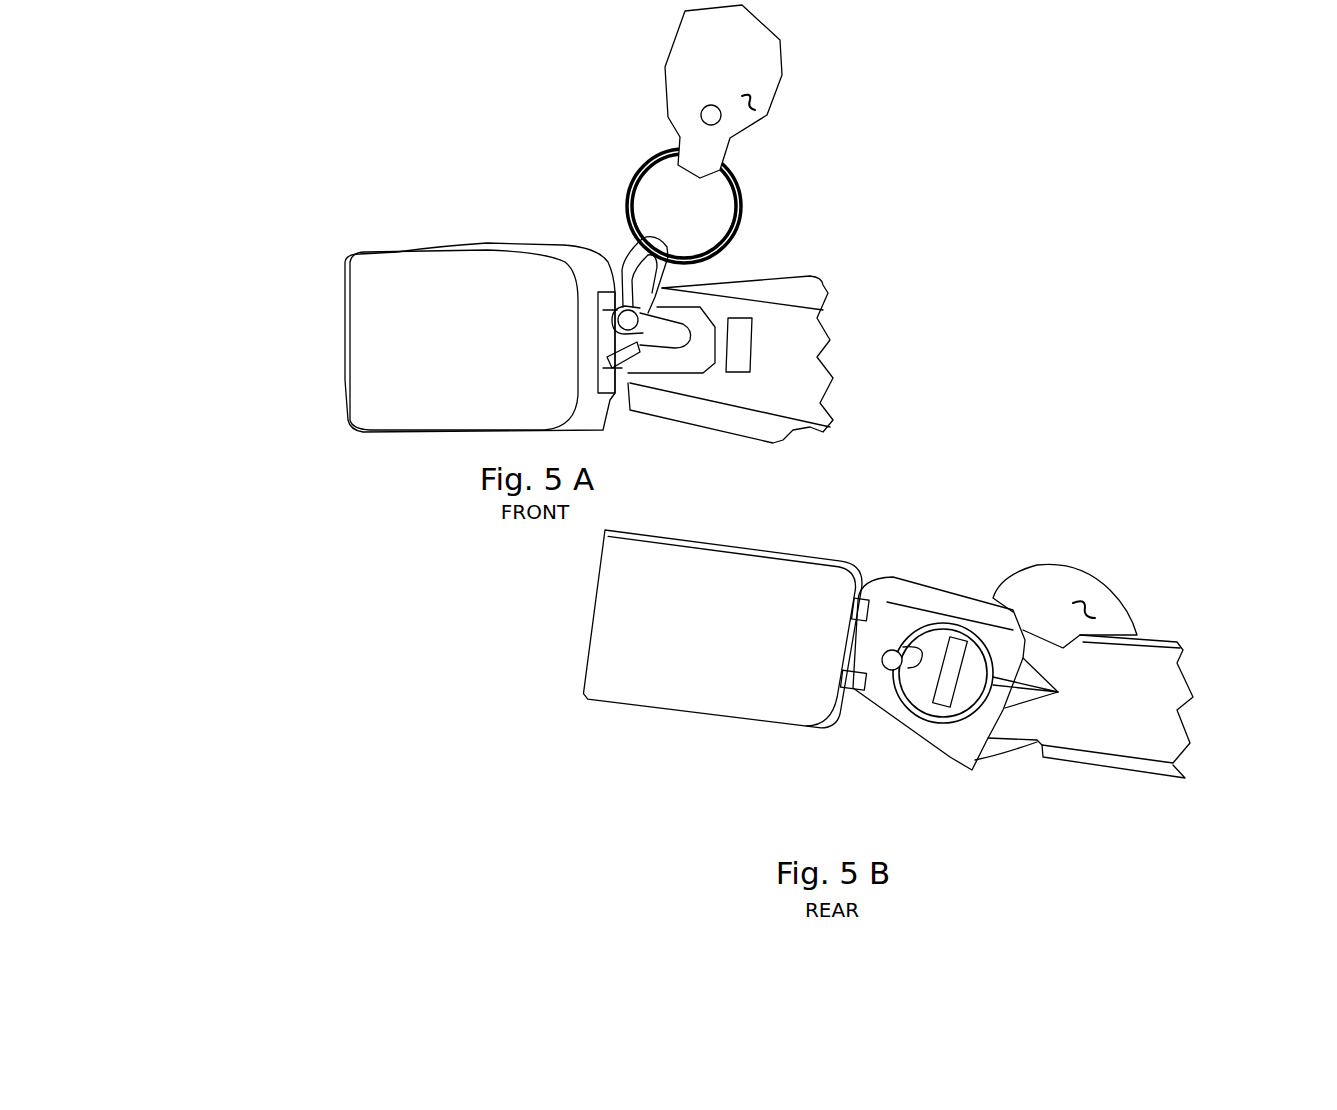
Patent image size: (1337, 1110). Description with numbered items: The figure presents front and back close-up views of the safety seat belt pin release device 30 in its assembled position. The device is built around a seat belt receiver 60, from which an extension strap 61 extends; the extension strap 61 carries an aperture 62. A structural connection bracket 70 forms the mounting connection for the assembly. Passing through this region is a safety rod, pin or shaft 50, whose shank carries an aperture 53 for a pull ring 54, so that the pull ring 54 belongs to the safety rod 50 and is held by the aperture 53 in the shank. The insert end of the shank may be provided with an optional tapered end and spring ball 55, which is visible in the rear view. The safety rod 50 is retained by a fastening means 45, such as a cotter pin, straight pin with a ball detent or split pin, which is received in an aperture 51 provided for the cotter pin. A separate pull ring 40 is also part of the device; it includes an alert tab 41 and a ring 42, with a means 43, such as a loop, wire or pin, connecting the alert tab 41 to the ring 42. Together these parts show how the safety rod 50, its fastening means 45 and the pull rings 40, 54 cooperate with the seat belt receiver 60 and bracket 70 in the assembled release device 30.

In FIG. 5A, the safety seat belt pin release device 30 is at (305, 468).
In FIG. 5B, the safety seat belt pin release device 30 is at (698, 860).
In FIG. 5A, the pull ring 40 is at (636, 141).
In FIG. 5A, the alert tab 41 is at (757, 104).
In FIG. 5B, the alert tab 41 is at (1090, 610).
In FIG. 5A, the ring 42 is at (743, 200).
In FIG. 5A, the means for connecting alert tab to ring 43 is at (722, 120).
In FIG. 5A, the fastening means 45 is at (668, 277).
In FIG. 5B, the safety rod 50 is at (885, 711).
In FIG. 5A, the aperture for cotter pin 51 is at (642, 335).
In FIG. 5B, the aperture in shank 53 is at (891, 678).
In FIG. 5B, the pull ring of safety rod 54 is at (937, 722).
In FIG. 5A, the tapered end and spring ball 55 is at (620, 323).
In FIG. 5B, the tapered end and spring ball 55 is at (882, 672).
In FIG. 5A, the seat belt receiver 60 is at (325, 332).
In FIG. 5B, the seat belt receiver 60 is at (682, 740).
In FIG. 5A, the extension strap 61 is at (695, 365).
In FIG. 5A, the aperture in strap 62 is at (662, 340).
In FIG. 5A, the structural connection bracket 70 is at (800, 368).
In FIG. 5B, the structural connection bracket 70 is at (1210, 673).